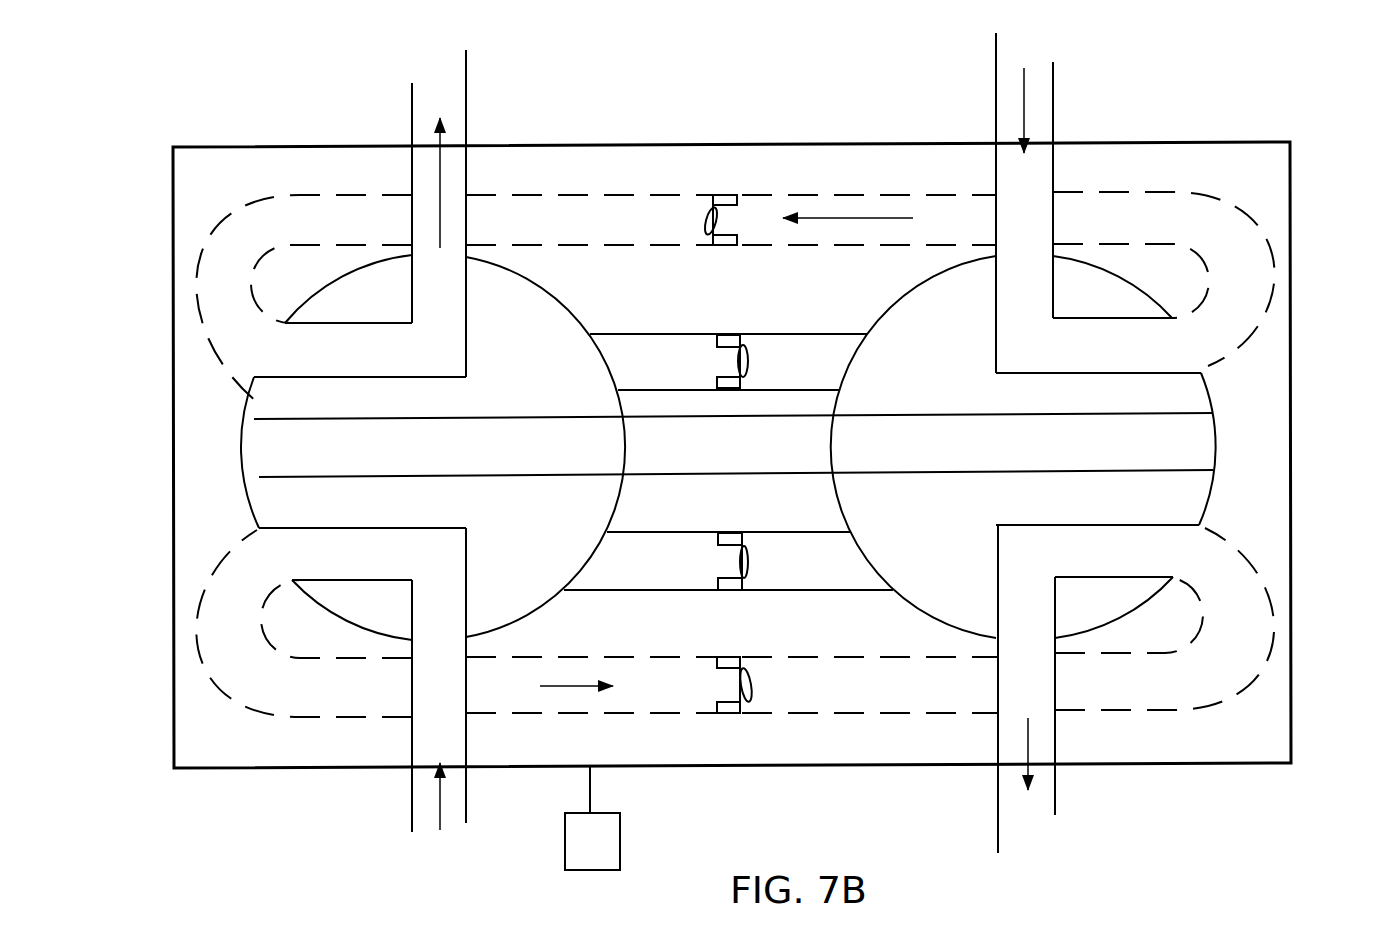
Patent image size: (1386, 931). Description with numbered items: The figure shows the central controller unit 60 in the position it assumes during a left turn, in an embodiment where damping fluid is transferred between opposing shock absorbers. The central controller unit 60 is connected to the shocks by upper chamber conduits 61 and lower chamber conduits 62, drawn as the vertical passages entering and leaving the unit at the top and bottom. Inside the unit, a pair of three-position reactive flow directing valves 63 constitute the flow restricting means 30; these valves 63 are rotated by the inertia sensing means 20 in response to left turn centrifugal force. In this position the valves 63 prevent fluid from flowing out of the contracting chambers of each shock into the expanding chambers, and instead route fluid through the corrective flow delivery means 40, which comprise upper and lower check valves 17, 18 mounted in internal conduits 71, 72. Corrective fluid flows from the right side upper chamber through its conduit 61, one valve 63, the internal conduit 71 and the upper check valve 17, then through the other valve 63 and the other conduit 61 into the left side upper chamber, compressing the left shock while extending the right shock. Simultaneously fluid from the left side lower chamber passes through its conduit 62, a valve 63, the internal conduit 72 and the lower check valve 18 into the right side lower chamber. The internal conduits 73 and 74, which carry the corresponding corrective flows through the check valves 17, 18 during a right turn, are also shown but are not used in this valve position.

The central controller unit 60 is at (1299, 357).
The flow restricting means 30 is at (211, 487).
The three-position reactive flow directing valve 63 is at (253, 377).
The upper chamber conduit 61 is at (479, 65).
The lower chamber conduit 62 is at (467, 783).
The internal conduit 71 is at (635, 192).
The internal conduit 72 is at (868, 712).
The internal conduit 73 is at (794, 391).
The internal conduit 74 is at (752, 533).
The corrective flow delivery means 40 is at (730, 189).
The upper check valve 17 is at (744, 355).
The lower check valve 18 is at (732, 565).
The inertia sensing means 20 is at (592, 818).